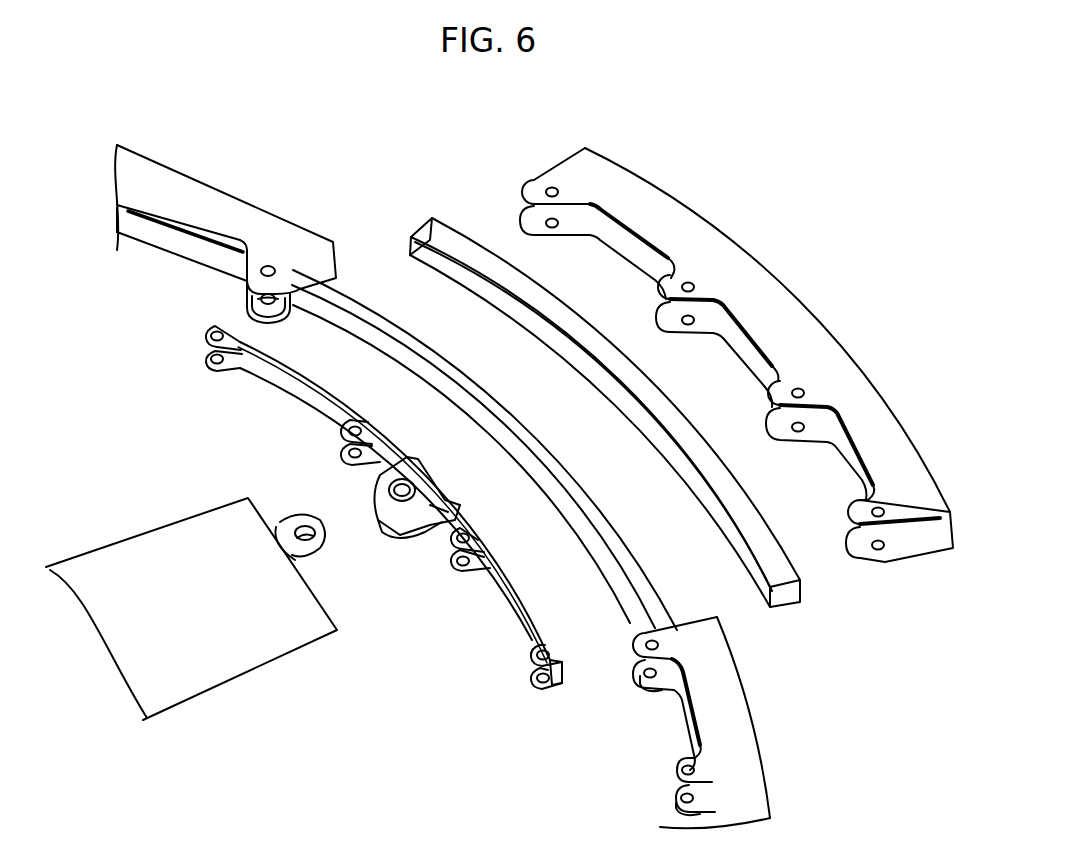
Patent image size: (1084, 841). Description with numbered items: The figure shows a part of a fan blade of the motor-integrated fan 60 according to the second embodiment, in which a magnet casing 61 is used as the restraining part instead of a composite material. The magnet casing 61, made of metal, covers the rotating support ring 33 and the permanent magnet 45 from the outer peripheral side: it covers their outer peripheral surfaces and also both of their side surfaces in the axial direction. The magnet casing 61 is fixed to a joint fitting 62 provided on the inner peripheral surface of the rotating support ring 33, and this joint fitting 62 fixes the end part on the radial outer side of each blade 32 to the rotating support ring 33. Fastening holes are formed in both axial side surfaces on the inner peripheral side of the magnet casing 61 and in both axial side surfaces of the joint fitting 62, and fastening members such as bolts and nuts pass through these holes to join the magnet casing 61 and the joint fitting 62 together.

The motor-integrated fan 60 is at (452, 128).
The rotating support ring 33 is at (362, 290).
The permanent magnet 45 is at (805, 594).
The magnet casing 61 is at (792, 308).
The joint fitting 62 is at (510, 610).
The blade 32 is at (123, 540).